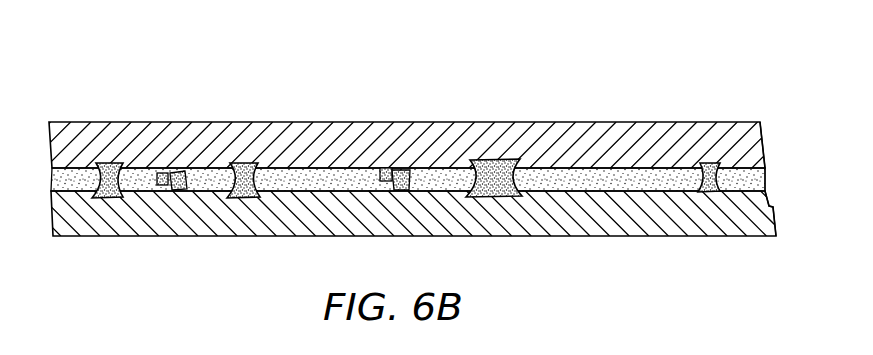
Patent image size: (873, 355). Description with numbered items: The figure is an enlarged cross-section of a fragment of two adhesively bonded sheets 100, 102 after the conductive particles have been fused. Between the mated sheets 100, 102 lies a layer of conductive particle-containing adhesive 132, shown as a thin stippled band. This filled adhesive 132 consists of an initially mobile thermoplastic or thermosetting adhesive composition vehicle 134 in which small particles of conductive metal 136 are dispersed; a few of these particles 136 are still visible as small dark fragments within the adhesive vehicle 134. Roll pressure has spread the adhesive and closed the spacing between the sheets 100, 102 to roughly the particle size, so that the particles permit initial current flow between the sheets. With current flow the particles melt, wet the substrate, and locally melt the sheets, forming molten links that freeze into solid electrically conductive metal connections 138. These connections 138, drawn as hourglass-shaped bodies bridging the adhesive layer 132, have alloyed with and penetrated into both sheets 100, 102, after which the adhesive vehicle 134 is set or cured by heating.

The sheet 100 is at (63, 142).
The sheet 102 is at (68, 218).
The conductive particle-containing adhesive 132 is at (783, 177).
The adhesive composition vehicle 134 is at (638, 174).
The particles of conductive metal 136 is at (400, 170).
The electrically conductive metal connections 138 is at (490, 167).